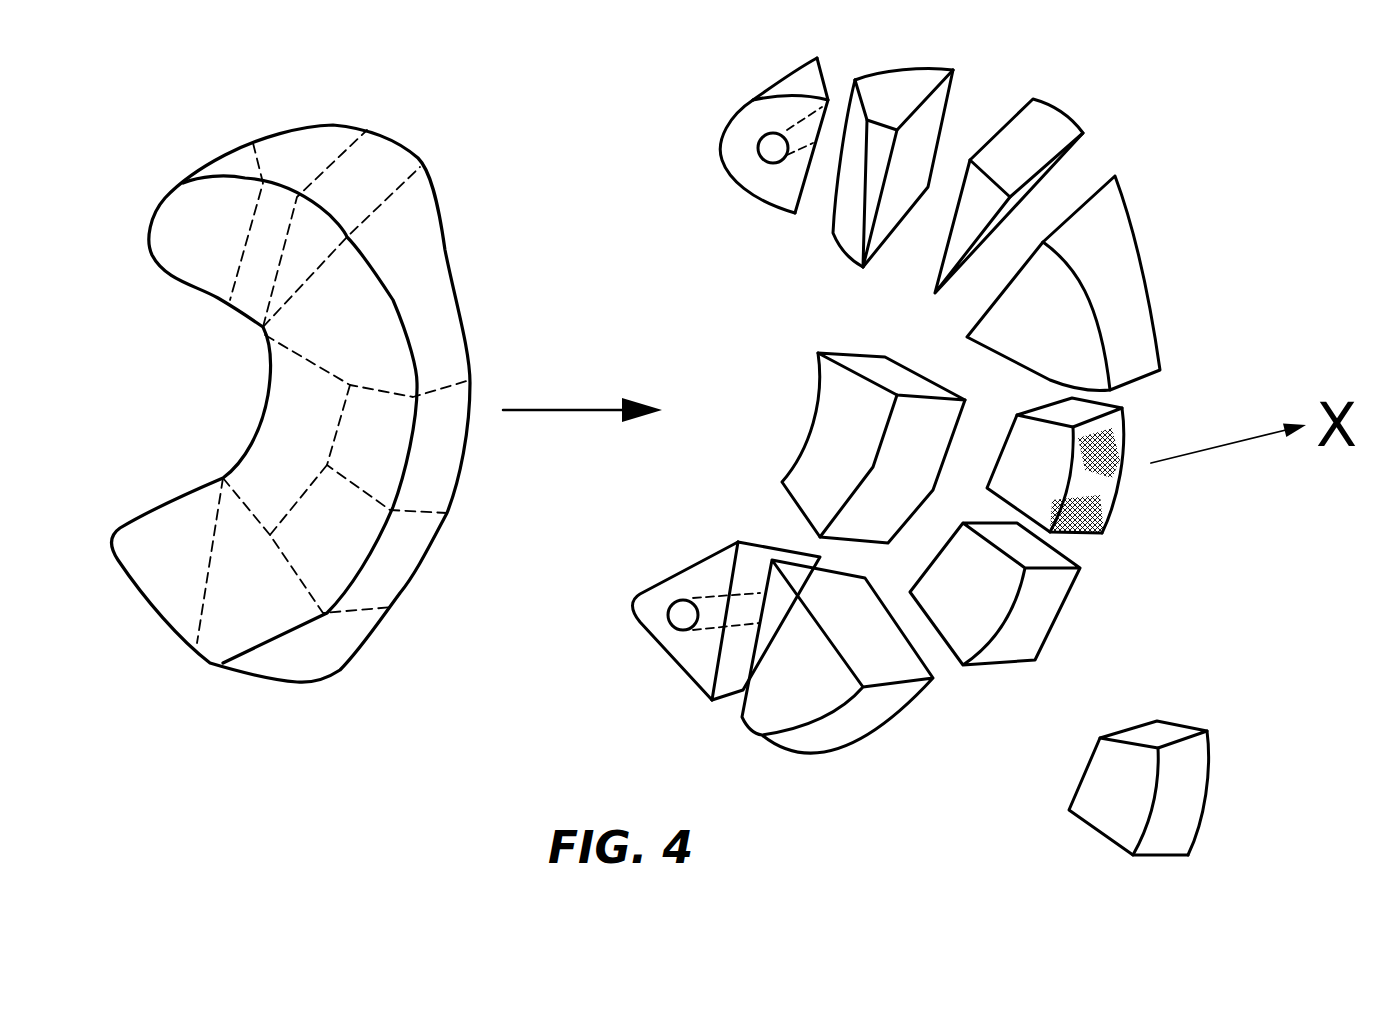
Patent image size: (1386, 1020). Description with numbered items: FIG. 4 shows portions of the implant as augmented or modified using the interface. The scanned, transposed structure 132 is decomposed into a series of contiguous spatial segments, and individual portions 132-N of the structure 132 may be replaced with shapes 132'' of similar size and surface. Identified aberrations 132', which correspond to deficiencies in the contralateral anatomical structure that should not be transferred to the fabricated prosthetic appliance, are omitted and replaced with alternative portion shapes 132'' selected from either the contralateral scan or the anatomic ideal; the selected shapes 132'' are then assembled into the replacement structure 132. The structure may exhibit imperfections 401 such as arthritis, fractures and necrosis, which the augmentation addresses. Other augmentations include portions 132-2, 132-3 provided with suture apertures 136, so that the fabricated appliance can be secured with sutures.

The scanned, transposed structure 132 is at (290, 448).
The portion of the structure 132-N is at (293, 128).
The portion with suture aperture 132-2 is at (757, 102).
The portion with suture aperture 132-3 is at (678, 667).
The suture aperture 136 is at (762, 159).
The identified aberrations 132' is at (1011, 408).
The alternative portion shape 132'' is at (1151, 606).
The imperfection 401 is at (1118, 465).